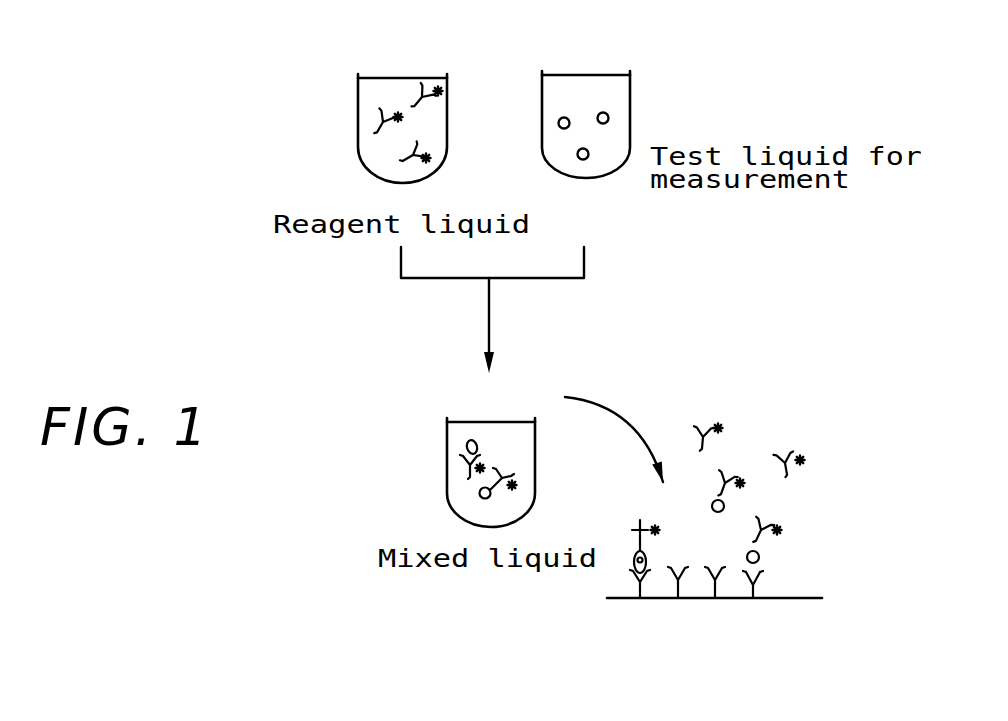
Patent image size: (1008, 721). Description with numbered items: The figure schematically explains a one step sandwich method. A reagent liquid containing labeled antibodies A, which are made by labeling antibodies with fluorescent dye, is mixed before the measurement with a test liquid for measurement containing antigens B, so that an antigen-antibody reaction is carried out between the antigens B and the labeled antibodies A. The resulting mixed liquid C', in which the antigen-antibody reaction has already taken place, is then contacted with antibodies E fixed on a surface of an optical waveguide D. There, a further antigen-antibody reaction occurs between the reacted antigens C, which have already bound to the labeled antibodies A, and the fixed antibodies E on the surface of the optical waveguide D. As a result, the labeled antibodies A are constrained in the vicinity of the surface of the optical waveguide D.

The labeled antibodies A is at (427, 110).
The antigens B is at (610, 119).
The reacted antigens C is at (628, 436).
The mixed liquid C' is at (419, 472).
The optical waveguide D is at (793, 613).
The antibodies E is at (700, 598).